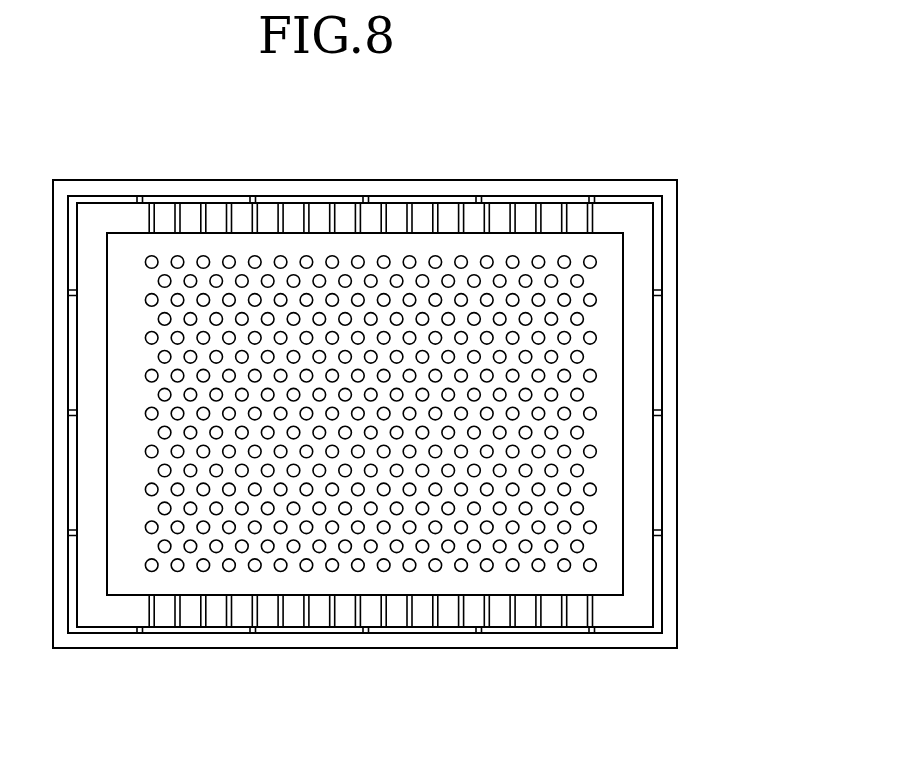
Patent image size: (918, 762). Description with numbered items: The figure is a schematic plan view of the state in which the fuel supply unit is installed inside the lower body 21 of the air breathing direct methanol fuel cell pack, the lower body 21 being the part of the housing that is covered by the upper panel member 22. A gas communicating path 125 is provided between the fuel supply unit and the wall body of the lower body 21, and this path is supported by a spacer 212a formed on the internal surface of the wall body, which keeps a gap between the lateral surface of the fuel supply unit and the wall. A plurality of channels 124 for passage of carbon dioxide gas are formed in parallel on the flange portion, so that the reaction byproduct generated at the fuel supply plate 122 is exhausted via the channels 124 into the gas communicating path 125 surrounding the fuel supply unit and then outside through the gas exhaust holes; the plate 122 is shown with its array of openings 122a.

The lower body 21 is at (580, 158).
The upper panel member 22 is at (522, 648).
The spacer 212a is at (655, 413).
The channels 124 is at (228, 217).
The gas communicating path 125 is at (417, 203).
The fuel supply plate 122 is at (365, 476).
The deposition openings 122a is at (278, 571).